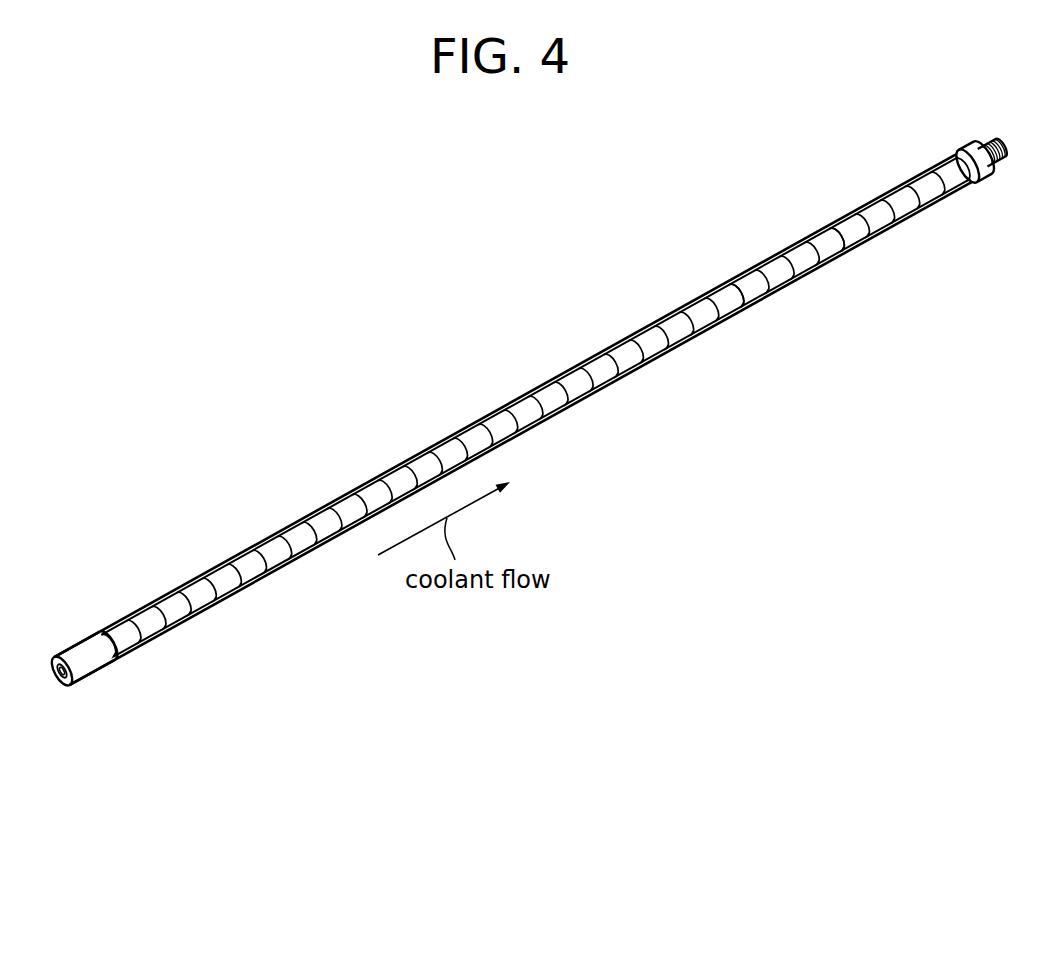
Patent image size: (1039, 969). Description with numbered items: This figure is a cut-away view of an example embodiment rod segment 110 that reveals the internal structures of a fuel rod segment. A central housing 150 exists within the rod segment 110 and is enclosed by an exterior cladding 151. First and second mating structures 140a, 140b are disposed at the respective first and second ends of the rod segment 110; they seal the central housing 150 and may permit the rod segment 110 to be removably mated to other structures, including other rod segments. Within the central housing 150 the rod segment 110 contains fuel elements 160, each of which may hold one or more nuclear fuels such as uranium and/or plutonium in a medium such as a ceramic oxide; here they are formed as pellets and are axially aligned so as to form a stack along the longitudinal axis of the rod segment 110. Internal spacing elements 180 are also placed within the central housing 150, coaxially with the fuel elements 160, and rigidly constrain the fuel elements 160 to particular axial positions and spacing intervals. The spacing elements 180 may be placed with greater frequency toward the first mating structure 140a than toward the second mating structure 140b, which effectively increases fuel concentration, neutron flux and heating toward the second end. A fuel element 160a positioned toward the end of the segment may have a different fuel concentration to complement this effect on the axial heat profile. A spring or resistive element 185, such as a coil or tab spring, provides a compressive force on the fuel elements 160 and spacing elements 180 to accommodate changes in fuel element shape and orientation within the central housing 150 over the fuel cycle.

The rod segment 110 is at (519, 422).
The first mating structure 140a is at (1003, 115).
The second mating structure 140b is at (76, 696).
The central housing 150 is at (177, 627).
The exterior cladding 151 is at (228, 598).
The fuel element 160 is at (595, 358).
The fuel element positioned toward the end 160a is at (953, 163).
The internal spacing element 180 is at (832, 237).
The resistive element 185 is at (977, 175).